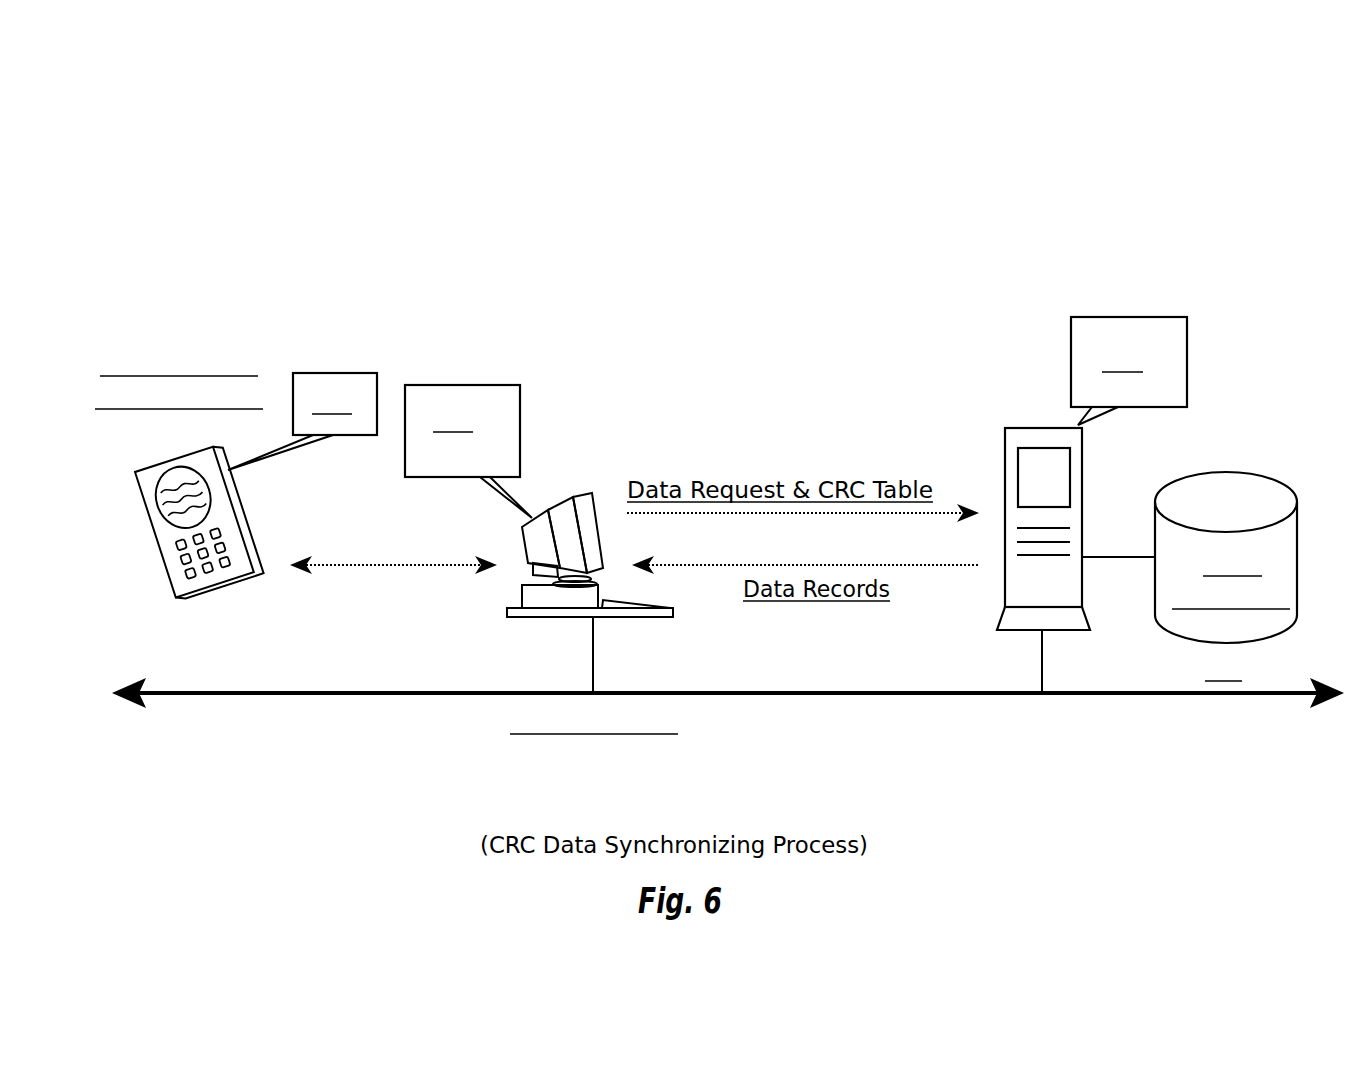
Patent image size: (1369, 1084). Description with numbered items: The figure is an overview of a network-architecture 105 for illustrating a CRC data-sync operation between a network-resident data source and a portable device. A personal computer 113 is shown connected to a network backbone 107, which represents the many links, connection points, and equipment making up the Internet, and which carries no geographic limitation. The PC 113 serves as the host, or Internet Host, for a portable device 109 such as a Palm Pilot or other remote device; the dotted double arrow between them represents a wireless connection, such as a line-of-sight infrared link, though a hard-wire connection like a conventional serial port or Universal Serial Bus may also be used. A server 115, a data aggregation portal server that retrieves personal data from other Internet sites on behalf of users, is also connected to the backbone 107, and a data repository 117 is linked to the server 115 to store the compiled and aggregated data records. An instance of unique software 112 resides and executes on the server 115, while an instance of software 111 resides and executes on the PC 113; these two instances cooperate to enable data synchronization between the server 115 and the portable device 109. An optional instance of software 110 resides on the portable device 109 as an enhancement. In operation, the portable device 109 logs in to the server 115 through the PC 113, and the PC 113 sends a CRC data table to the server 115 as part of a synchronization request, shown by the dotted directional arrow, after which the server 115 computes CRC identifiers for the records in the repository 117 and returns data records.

The network-architecture 105 is at (228, 206).
The network backbone 107 is at (255, 693).
The portable device 109 is at (160, 559).
The software instance 110 is at (336, 373).
The software instance 111 is at (520, 420).
The software instance 112 is at (1070, 357).
The personal computer 113 is at (573, 495).
The server 115 is at (1005, 462).
The data repository 117 is at (1300, 558).